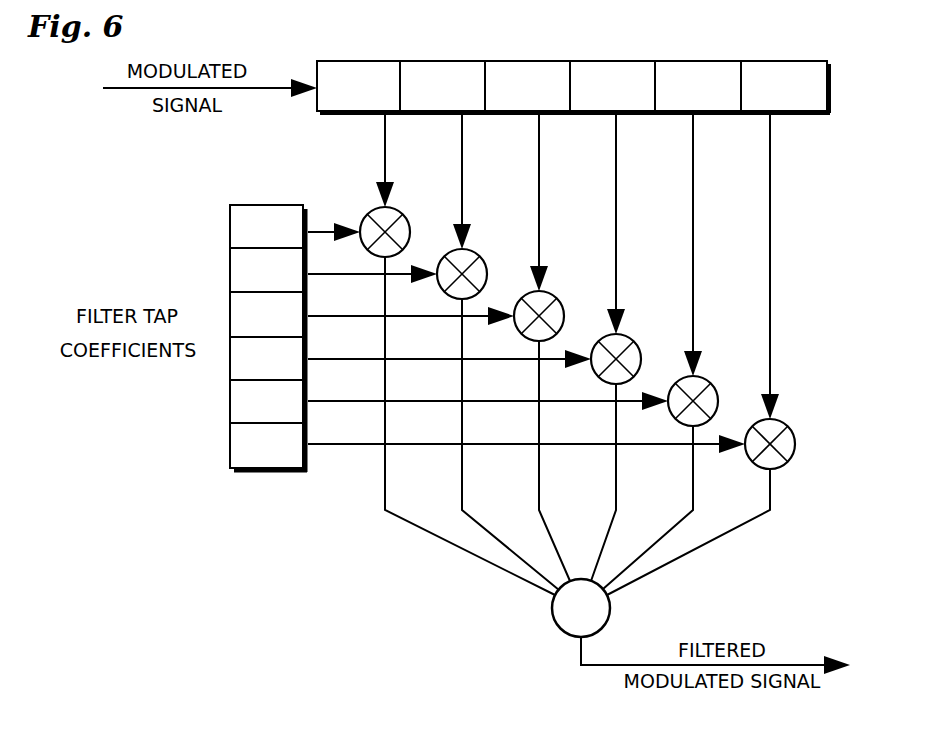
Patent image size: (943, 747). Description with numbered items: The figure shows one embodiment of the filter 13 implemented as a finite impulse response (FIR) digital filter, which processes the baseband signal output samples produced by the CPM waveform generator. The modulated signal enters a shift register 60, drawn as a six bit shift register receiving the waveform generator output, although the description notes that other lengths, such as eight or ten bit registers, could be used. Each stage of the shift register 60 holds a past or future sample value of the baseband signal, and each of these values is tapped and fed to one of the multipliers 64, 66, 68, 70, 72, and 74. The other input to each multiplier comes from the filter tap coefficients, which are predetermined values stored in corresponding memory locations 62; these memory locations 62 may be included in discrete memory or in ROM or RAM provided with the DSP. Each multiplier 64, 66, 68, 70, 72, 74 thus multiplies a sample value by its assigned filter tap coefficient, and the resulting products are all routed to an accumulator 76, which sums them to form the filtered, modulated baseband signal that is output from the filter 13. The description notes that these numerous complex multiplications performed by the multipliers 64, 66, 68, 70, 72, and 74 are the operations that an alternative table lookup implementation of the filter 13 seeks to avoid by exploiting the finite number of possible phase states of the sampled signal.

The filter 13 is at (853, 178).
The shift register 60 is at (362, 113).
The memory locations 62 is at (286, 204).
The multiplier 64 is at (402, 215).
The multiplier 66 is at (479, 257).
The multiplier 68 is at (556, 299).
The multiplier 70 is at (633, 342).
The multiplier 72 is at (710, 384).
The multiplier 74 is at (787, 427).
The accumulator 76 is at (556, 622).